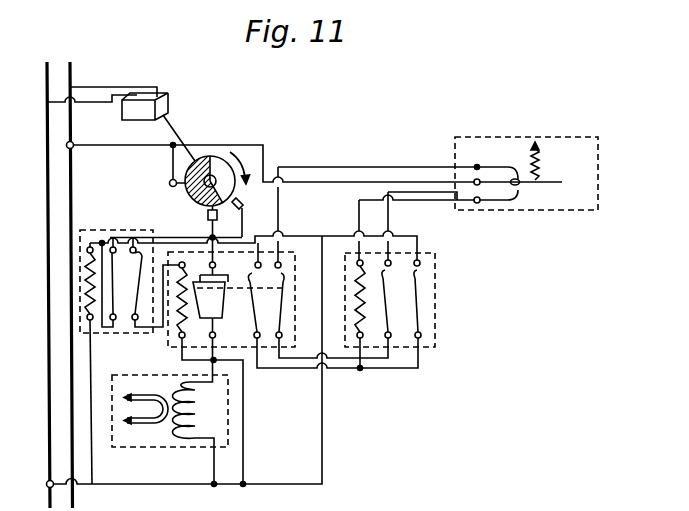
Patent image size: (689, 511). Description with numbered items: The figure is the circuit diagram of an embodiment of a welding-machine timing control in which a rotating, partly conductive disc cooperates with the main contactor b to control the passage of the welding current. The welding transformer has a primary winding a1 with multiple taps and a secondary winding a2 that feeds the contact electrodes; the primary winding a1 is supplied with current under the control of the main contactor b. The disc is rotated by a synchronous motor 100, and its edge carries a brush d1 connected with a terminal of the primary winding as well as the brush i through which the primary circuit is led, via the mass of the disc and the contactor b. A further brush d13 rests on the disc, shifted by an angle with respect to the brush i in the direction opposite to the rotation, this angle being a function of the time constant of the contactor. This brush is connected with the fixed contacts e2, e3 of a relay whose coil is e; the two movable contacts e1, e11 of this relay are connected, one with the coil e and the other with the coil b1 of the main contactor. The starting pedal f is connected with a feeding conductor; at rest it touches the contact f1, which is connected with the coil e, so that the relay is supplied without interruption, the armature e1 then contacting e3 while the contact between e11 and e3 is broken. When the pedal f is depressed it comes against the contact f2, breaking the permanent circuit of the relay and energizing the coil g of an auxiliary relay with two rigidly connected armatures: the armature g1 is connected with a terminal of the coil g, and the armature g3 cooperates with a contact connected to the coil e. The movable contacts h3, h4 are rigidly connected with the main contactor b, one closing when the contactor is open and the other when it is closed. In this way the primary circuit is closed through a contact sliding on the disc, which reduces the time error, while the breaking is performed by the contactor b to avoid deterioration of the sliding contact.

The synchronous motor 100 is at (137, 107).
The brush d1 is at (215, 165).
The controller contact d13 is at (247, 205).
The brush i is at (205, 216).
The relay coil e is at (88, 290).
The movable armature e1 is at (117, 285).
The fixed contact e2 is at (113, 246).
The fixed contact e3 is at (142, 244).
The movable contact e11 is at (132, 319).
The main contactor b is at (231, 317).
The coil of the main contactor b1 is at (180, 337).
The movable contact h3 is at (256, 327).
The movable contact h4 is at (281, 296).
The auxiliary relay coil g is at (355, 302).
The armature g1 is at (396, 299).
The armature g3 is at (417, 315).
The starting pedal f is at (547, 183).
The rest contact f1 is at (494, 169).
The working contact f2 is at (492, 209).
The primary winding a1 is at (196, 418).
The secondary winding a2 is at (144, 423).